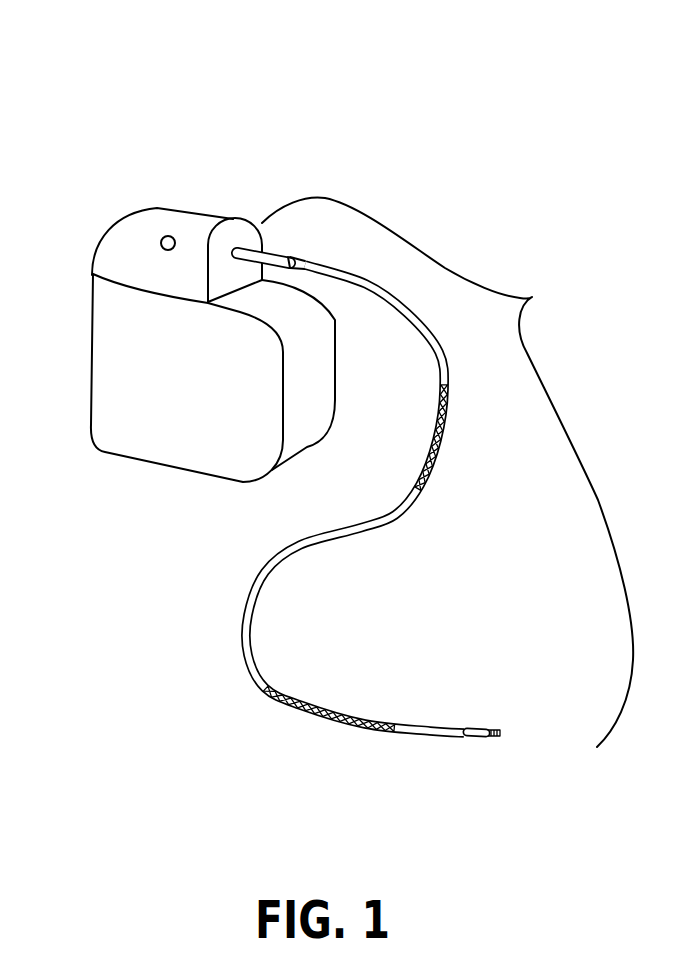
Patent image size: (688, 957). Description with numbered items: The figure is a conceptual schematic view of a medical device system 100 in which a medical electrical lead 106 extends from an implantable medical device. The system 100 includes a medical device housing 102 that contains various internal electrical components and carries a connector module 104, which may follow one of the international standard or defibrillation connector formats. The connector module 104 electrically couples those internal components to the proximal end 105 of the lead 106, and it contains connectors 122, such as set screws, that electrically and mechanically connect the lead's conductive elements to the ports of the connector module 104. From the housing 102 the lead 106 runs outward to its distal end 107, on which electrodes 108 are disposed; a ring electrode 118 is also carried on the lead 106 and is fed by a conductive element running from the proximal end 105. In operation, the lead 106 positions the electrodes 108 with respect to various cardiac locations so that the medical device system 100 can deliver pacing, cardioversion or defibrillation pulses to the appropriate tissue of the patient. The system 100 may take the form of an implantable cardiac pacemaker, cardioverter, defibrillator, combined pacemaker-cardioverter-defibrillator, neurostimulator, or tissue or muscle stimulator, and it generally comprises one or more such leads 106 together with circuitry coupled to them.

The medical device system 100 is at (337, 407).
The medical device housing 102 is at (88, 362).
The connector module 104 is at (155, 233).
The proximal end 105 is at (247, 225).
The medical electrical lead 106 is at (439, 493).
The distal end 107 is at (515, 726).
The electrodes 108 is at (356, 676).
The ring electrode 118 is at (466, 742).
The connectors 122 is at (161, 242).